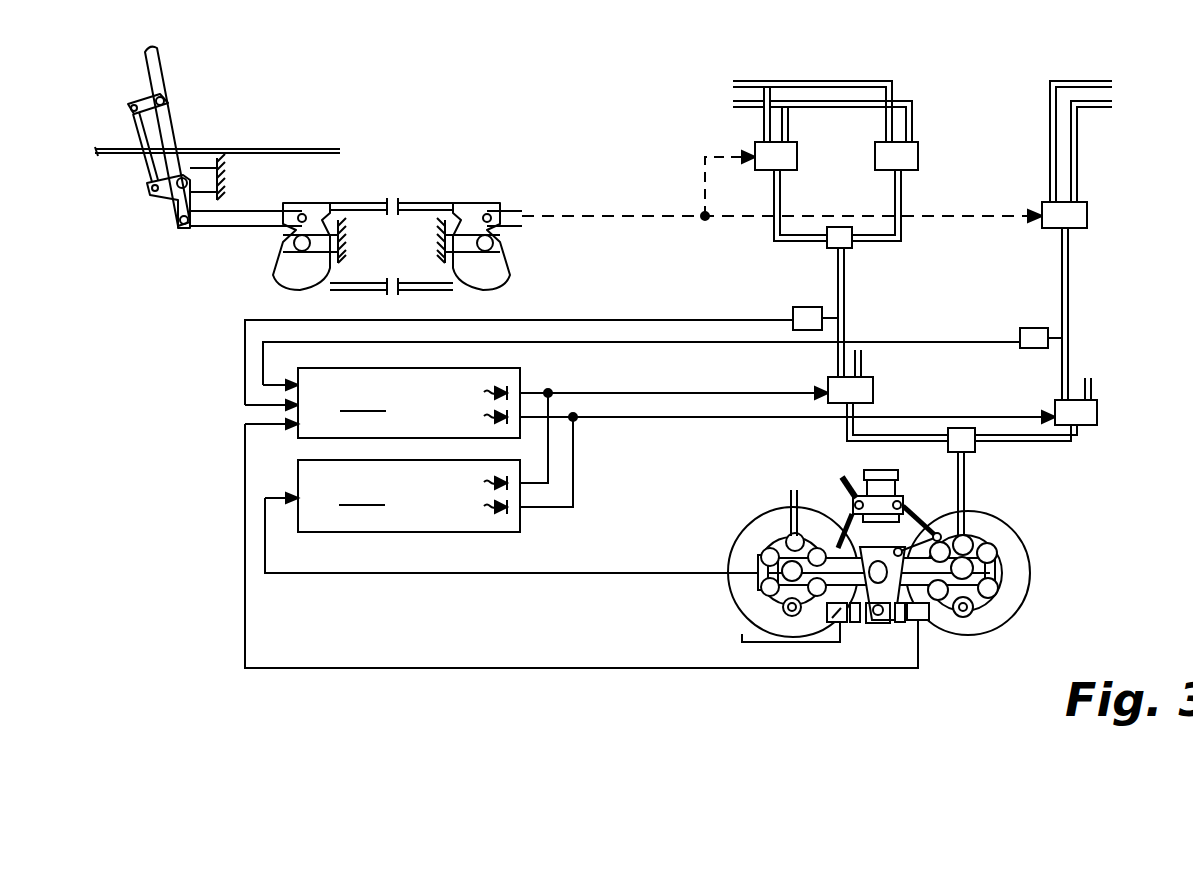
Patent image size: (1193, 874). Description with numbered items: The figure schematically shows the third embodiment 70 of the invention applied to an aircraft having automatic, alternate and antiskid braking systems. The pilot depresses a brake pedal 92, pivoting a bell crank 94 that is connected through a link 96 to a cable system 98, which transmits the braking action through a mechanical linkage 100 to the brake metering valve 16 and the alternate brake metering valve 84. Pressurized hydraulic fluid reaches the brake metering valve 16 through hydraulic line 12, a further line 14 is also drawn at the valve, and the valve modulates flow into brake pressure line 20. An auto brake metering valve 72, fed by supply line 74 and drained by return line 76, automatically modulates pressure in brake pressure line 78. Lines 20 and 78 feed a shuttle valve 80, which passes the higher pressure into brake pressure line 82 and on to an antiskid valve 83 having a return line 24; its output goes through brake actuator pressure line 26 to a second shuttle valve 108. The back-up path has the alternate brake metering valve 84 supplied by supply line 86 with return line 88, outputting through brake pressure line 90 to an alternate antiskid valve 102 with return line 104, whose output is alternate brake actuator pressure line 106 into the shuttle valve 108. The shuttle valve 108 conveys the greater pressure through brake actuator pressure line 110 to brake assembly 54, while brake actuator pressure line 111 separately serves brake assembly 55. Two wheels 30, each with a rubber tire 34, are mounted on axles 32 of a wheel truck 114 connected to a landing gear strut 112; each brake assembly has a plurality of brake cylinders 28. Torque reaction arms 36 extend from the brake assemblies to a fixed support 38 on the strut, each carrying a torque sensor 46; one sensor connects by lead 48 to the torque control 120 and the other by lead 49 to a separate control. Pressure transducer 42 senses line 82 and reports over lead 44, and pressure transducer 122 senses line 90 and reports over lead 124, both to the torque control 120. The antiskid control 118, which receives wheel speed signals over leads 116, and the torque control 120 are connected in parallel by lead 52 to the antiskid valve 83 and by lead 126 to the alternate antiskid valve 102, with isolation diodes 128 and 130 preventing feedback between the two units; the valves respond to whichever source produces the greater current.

The hydraulic line 12 is at (764, 112).
The brake fluid line 14 is at (789, 132).
The brake metering valve 16 is at (790, 157).
The brake pressure line 20 is at (781, 202).
The return line 24 is at (864, 364).
The brake actuator pressure line 26 is at (845, 426).
The brake cylinders 28 is at (787, 536).
The wheel 30 is at (782, 562).
The axle 32 is at (784, 608).
The rubber tire 34 is at (1003, 614).
The torque reaction arms 36 is at (855, 623).
The fixed support 38 is at (876, 626).
The pressure transducer 42 is at (806, 305).
The lead 44 is at (430, 320).
The torque sensor 46 is at (833, 624).
The lead 48 is at (760, 668).
The lead 49 is at (742, 640).
The lead 52 is at (738, 392).
The brake assembly 54 is at (993, 538).
The brake assembly 55 is at (752, 560).
The third embodiment 70 is at (571, 390).
The auto brake metering valve 72 is at (912, 150).
The supply line 74 is at (893, 86).
The return line 76 is at (913, 114).
The brake pressure line 78 is at (895, 190).
The shuttle valve 80 is at (850, 243).
The brake pressure line 82 is at (846, 302).
The antiskid valve 83 is at (875, 393).
The alternate brake metering valve 84 is at (1085, 215).
The supply line 86 is at (1050, 155).
The return line 88 is at (1079, 140).
The brake pressure line 90 is at (1069, 282).
The brake pedal 92 is at (160, 62).
The bell crank 94 is at (178, 205).
The link 96 is at (242, 222).
The cable system 98 is at (404, 192).
The mechanical linkage 100 is at (605, 216).
The alternate antiskid valve 102 is at (1099, 413).
The return line 104 is at (1094, 383).
The alternate brake actuator pressure line 106 is at (1077, 444).
The shuttle valve 108 is at (977, 446).
The brake actuator pressure line 110 is at (967, 480).
The brake actuator pressure line 111 is at (794, 490).
The landing gear strut 112 is at (893, 486).
The wheel truck 114 is at (838, 560).
The leads 116 is at (588, 573).
The antiskid control 118 is at (409, 496).
The torque control 120 is at (409, 403).
The pressure transducer 122 is at (1030, 326).
The lead 124 is at (673, 341).
The lead 126 is at (667, 418).
The isolation diodes 128 is at (494, 388).
The isolation diodes 130 is at (498, 482).